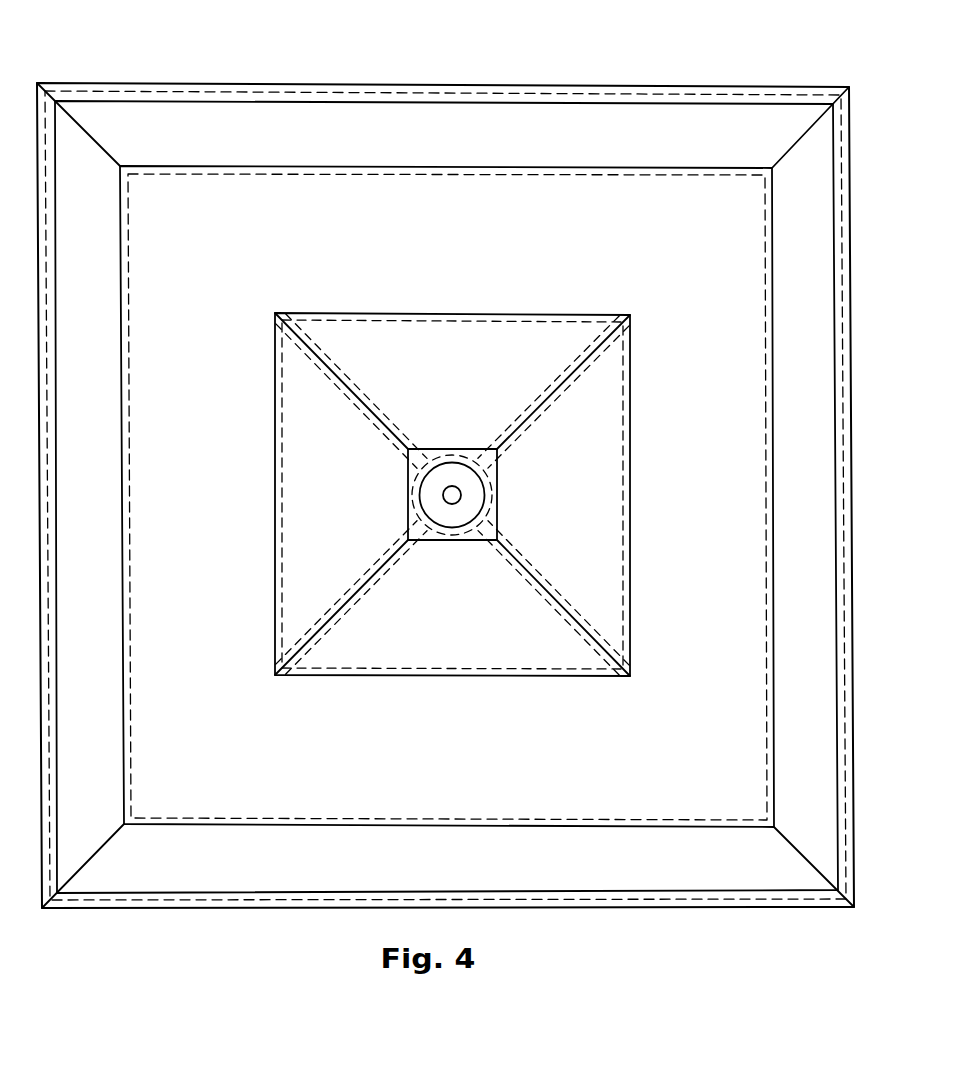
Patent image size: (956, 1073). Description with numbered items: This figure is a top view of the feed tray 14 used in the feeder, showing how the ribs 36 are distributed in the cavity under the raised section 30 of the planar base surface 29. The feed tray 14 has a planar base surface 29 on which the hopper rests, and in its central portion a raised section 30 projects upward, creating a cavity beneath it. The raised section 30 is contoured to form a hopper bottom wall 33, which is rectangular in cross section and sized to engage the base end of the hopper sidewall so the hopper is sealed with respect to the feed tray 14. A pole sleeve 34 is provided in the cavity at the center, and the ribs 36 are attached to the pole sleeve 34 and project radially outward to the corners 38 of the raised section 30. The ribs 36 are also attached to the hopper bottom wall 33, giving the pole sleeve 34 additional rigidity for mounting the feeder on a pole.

The feed tray 14 is at (161, 81).
The planar base surface 29 is at (612, 772).
The raised section 30 is at (461, 378).
The hopper bottom wall 33 is at (557, 496).
The pole sleeve 34 is at (409, 471).
The ribs 36 is at (558, 373).
The corners 38 is at (275, 307).